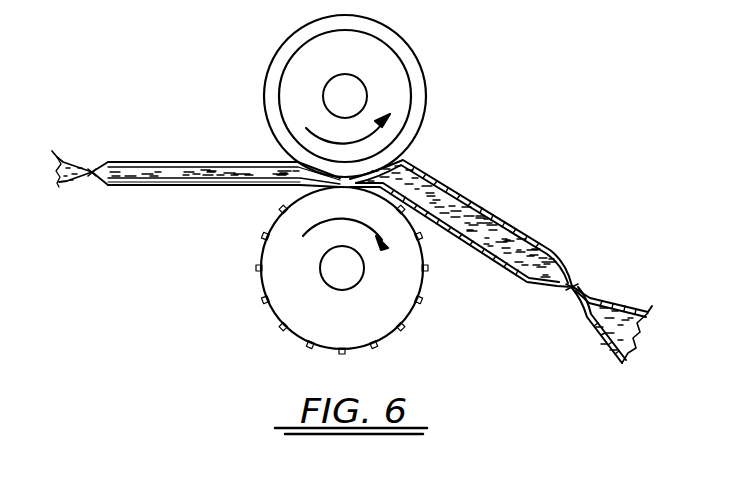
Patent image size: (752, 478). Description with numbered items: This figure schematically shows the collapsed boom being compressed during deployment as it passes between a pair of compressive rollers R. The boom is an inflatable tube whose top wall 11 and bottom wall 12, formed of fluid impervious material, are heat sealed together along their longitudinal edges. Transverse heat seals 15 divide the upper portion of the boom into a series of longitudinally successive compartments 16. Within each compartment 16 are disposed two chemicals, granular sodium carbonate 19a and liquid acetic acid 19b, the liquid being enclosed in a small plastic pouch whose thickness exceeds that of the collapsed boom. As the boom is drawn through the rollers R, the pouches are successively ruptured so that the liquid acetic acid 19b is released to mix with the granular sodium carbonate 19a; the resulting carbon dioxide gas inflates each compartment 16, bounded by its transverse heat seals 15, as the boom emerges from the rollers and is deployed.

The rollers R is at (425, 80).
The top wall 11 is at (180, 161).
The bottom wall 12 is at (225, 188).
The transverse heat seals 15 is at (92, 170).
The compartments 16 is at (488, 212).
The granular sodium carbonate 19a is at (155, 186).
The liquid acetic acid 19b is at (283, 164).